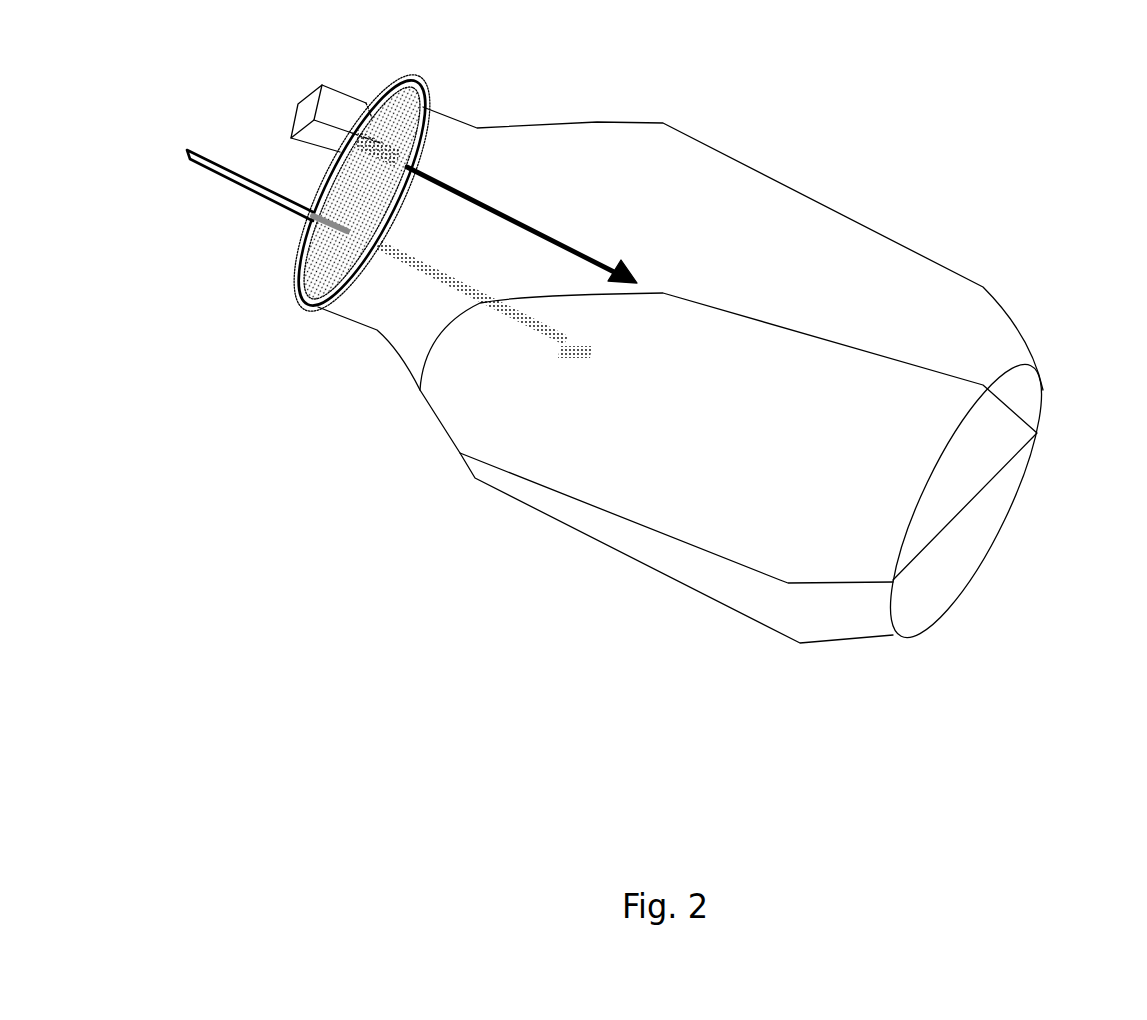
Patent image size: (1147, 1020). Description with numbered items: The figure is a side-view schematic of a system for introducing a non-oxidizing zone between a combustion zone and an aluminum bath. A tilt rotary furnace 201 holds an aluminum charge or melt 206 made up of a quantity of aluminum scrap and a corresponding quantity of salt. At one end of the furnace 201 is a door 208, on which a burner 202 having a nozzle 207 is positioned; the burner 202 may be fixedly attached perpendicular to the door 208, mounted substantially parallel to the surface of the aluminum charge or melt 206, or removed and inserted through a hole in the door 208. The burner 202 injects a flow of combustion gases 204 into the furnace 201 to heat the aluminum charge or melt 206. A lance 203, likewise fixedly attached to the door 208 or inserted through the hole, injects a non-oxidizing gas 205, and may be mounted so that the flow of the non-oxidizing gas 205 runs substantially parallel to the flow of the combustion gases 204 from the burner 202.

The tilt rotary furnace 201 is at (793, 187).
The burner 202 is at (328, 88).
The lance 203 is at (195, 150).
The flow of combustion gases 204 is at (627, 278).
The non-oxidizing gas 205 is at (577, 338).
The aluminum charge or melt 206 is at (1000, 500).
The nozzle 207 is at (393, 150).
The door 208 is at (302, 300).